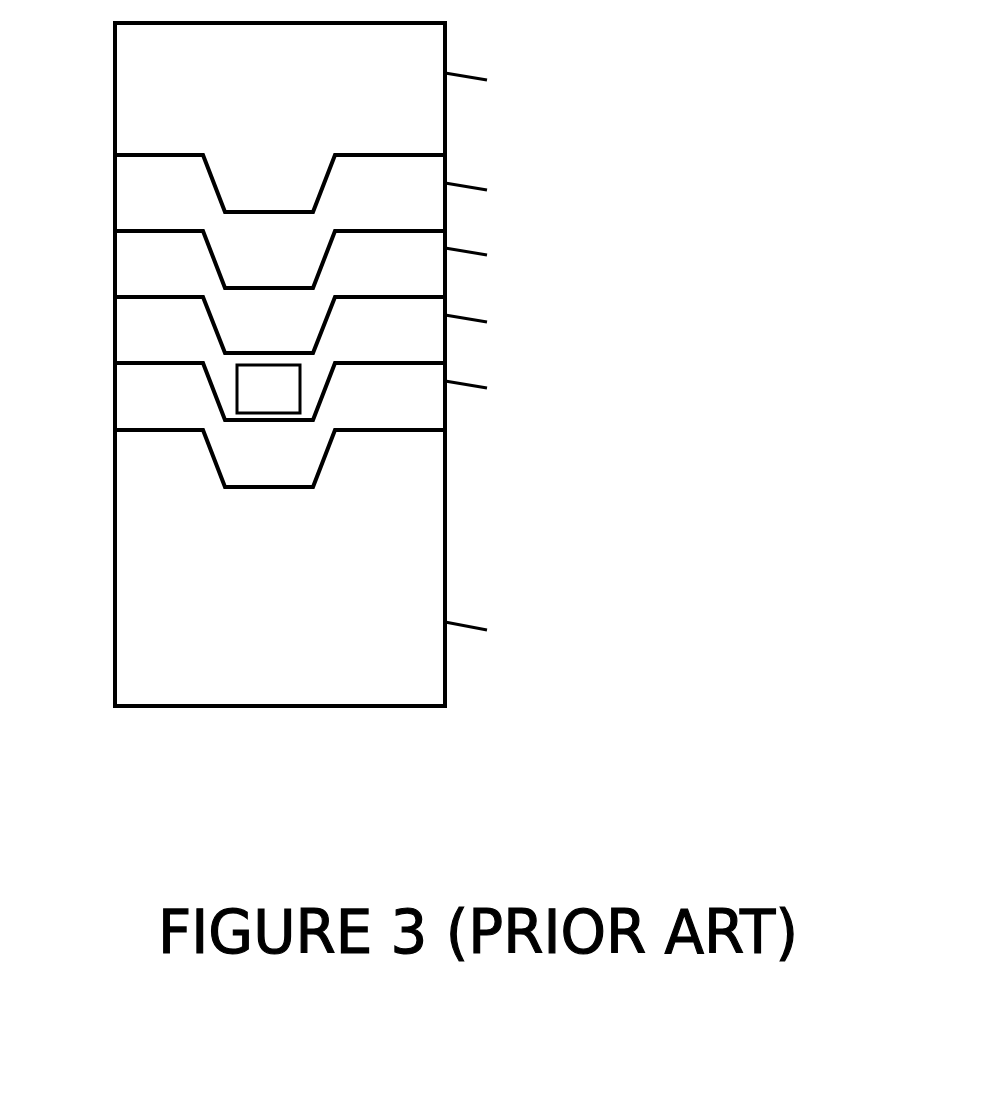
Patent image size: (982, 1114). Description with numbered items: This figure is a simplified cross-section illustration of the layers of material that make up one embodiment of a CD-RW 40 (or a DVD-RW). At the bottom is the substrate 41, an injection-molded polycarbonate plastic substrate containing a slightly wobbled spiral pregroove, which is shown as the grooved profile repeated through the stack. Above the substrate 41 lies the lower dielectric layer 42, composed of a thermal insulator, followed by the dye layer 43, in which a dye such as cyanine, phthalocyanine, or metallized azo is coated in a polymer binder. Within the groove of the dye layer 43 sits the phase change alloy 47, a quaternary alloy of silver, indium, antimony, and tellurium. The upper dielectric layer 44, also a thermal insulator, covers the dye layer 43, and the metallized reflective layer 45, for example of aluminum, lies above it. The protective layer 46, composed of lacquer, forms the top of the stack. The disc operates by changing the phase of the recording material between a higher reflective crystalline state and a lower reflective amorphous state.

The CD-RW disc 40 is at (445, 706).
The substrate 41 is at (115, 654).
The lower dielectric layer 42 is at (115, 391).
The dye layer 43 is at (115, 326).
The upper dielectric layer 44 is at (115, 259).
The metallized reflective layer 45 is at (115, 192).
The protective layer 46 is at (115, 102).
The phase change alloy 47 is at (288, 404).